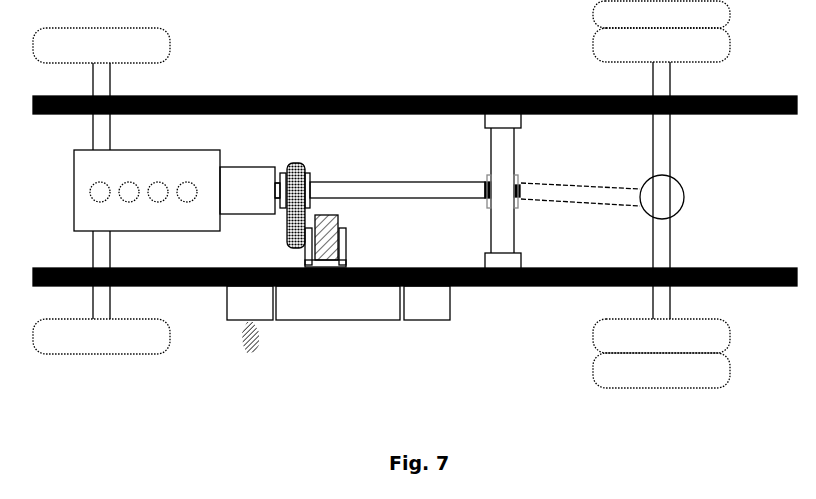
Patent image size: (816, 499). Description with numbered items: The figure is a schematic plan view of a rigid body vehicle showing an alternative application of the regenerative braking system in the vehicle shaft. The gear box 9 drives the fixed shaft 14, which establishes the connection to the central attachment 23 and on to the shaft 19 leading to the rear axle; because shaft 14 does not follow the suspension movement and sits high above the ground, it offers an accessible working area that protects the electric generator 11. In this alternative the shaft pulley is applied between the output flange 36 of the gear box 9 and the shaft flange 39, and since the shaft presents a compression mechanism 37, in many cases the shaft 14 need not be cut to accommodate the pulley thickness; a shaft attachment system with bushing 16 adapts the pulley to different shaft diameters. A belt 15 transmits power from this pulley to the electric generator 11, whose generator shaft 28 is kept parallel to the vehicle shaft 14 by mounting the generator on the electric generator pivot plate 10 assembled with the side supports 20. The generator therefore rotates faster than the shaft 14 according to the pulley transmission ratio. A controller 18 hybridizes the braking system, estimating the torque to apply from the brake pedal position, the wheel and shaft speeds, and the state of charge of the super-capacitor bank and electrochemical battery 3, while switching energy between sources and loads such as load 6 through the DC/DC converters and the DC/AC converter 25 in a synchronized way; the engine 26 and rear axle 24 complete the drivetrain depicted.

The electrochemical battery 3 is at (340, 321).
The load 6 is at (256, 343).
The gear box 9 is at (247, 166).
The electric generator pivot plate 10 is at (331, 265).
The electric generator 11 is at (330, 238).
The shaft 14 is at (398, 182).
The belt 15 is at (296, 163).
The shaft attachment system / bushing 16 is at (282, 196).
The controller 18 is at (429, 321).
The shaft 19 is at (588, 192).
The side supports 20 is at (349, 250).
The central attachment 23 is at (510, 172).
The rear axle 24 is at (800, 160).
The DC/AC converter 25 is at (226, 302).
The engine 26 is at (188, 150).
The generator shaft / flange 28 is at (348, 238).
The output flange 36 is at (281, 171).
The compression mechanism 37 is at (488, 181).
The shaft flange 39 is at (309, 172).